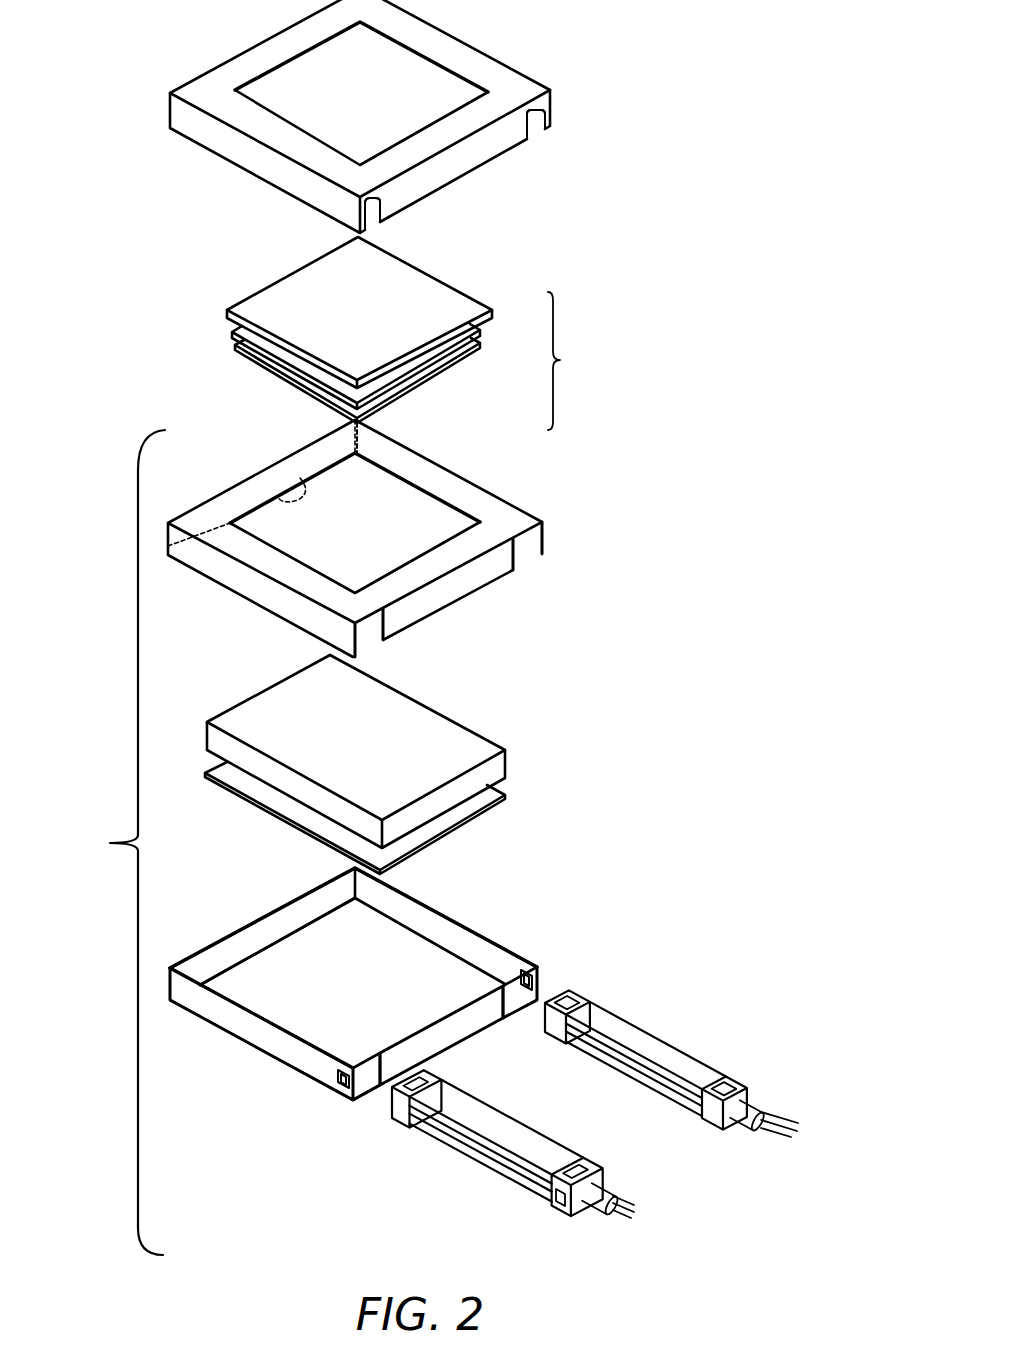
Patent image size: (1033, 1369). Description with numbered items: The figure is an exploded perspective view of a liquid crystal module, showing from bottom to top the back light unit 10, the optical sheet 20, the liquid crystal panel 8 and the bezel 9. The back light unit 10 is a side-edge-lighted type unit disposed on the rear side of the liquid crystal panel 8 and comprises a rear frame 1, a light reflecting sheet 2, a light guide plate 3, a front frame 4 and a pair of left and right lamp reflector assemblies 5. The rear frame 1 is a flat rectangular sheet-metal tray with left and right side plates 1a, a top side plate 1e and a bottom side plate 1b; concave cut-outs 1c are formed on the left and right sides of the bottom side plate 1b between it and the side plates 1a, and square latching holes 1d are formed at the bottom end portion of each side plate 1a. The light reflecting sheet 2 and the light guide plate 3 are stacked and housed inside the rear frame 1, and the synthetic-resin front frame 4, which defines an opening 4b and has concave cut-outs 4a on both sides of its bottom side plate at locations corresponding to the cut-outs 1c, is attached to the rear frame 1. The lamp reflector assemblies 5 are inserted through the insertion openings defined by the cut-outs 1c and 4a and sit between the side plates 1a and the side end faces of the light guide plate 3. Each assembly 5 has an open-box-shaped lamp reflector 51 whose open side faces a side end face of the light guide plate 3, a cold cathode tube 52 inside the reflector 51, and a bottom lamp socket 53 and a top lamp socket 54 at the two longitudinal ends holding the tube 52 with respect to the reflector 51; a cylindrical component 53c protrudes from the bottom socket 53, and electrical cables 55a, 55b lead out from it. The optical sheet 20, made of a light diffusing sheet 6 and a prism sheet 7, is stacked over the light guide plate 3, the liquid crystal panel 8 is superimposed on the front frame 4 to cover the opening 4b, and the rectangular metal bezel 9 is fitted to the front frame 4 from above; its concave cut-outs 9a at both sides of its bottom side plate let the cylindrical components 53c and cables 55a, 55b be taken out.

The rear frame 1 is at (295, 958).
The left and right side plates 1a is at (440, 912).
The bottom side plate 1b is at (457, 1032).
The concave cut-outs 1c is at (521, 995).
The latching holes 1d is at (527, 960).
The top side plate 1e is at (227, 940).
The light reflecting sheet 2 is at (240, 785).
The light guide plate 3 is at (447, 733).
The front frame 4 is at (237, 575).
The concave cut-outs 4a is at (527, 558).
The opening 4b is at (300, 478).
The lamp reflector assemblies 5 is at (612, 1102).
The light diffusing sheet 6 is at (447, 363).
The prism sheet 7 is at (480, 335).
The liquid crystal panel 8 is at (440, 298).
The bezel 9 is at (267, 135).
The concave cut-outs 9a is at (539, 133).
The back light unit 10 is at (117, 842).
The optical sheet 20 is at (578, 361).
The lamp reflector 51 is at (678, 1058).
The cold cathode tube 52 is at (637, 1078).
The bottom lamp socket 53 is at (716, 1122).
The cylindrical component 53c is at (755, 1082).
The top lamp socket 54 is at (556, 1022).
The electrical cable 55a is at (763, 1132).
The electrical cable 55b is at (777, 1105).